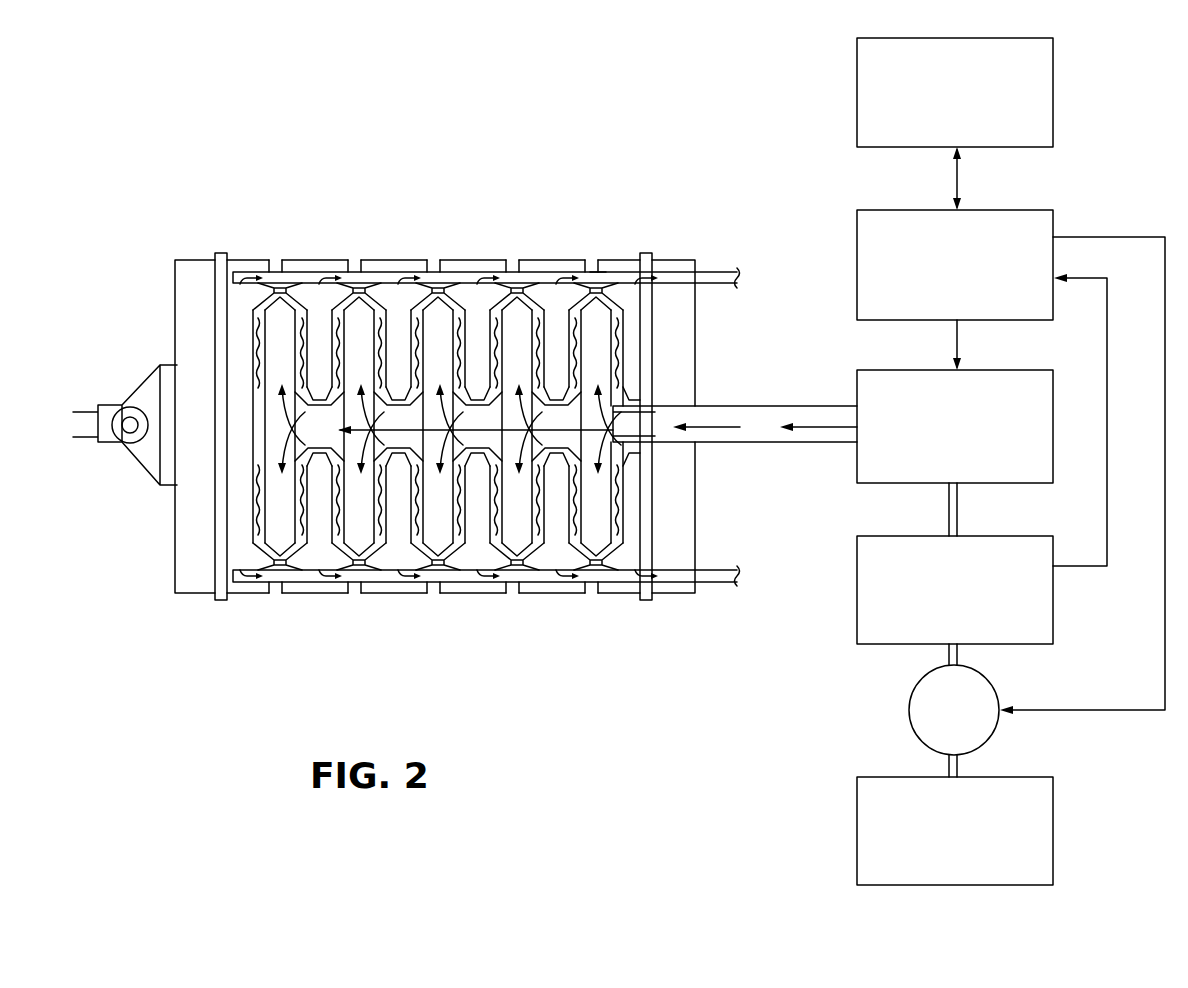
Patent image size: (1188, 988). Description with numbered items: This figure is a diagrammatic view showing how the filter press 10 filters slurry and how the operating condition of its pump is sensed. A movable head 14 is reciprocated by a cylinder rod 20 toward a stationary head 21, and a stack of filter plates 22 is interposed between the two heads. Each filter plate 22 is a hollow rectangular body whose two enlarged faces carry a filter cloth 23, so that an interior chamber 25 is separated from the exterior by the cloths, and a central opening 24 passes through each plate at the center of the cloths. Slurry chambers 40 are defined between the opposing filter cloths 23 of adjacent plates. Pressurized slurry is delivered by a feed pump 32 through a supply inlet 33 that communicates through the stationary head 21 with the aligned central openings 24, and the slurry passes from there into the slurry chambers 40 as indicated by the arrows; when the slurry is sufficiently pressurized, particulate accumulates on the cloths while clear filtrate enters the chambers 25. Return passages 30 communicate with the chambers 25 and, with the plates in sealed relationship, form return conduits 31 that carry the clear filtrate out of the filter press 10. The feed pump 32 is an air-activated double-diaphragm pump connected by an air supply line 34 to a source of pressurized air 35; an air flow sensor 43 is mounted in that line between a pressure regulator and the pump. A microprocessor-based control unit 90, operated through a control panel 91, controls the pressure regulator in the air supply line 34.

The filter press 10 is at (207, 237).
The movable head 14 is at (197, 577).
The cylinder rod 20 is at (83, 425).
The stationary head 21 is at (688, 535).
The filter plate 22 is at (394, 260).
The filter cloth 23 is at (476, 330).
The central opening 24 is at (338, 432).
The chamber 25 is at (563, 547).
The return passage 30 is at (546, 298).
The return conduit 31 is at (598, 262).
The feed pump 32 is at (857, 377).
The supply inlet 33 is at (601, 292).
The air supply line 34 is at (957, 523).
The source of pressurized air 35 is at (857, 822).
The slurry chamber 40 is at (312, 300).
The air flow sensor 43 is at (1053, 625).
The control unit 90 is at (857, 238).
The control panel 91 is at (857, 89).